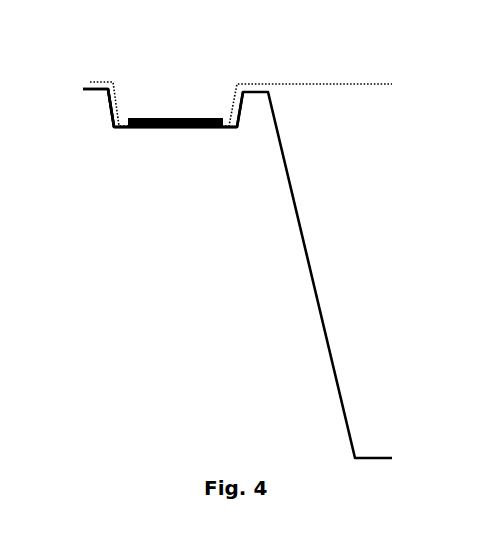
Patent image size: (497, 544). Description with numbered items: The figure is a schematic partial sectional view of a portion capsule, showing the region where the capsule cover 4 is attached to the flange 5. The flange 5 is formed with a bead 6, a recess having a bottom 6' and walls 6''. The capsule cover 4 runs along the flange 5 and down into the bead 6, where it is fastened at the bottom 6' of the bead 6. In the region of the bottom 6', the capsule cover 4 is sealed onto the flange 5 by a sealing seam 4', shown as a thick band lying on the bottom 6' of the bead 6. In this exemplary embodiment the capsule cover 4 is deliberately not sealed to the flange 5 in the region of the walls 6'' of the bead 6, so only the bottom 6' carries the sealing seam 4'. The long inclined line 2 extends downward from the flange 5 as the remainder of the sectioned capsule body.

The substrate body 2 is at (320, 313).
The capsule cover 4 is at (241, 87).
The sealing seam 4' is at (175, 76).
The flange 5 is at (93, 90).
The bead 6 is at (175, 167).
The bottom of the bead 6' is at (175, 164).
The walls of the bead 6'' is at (175, 145).